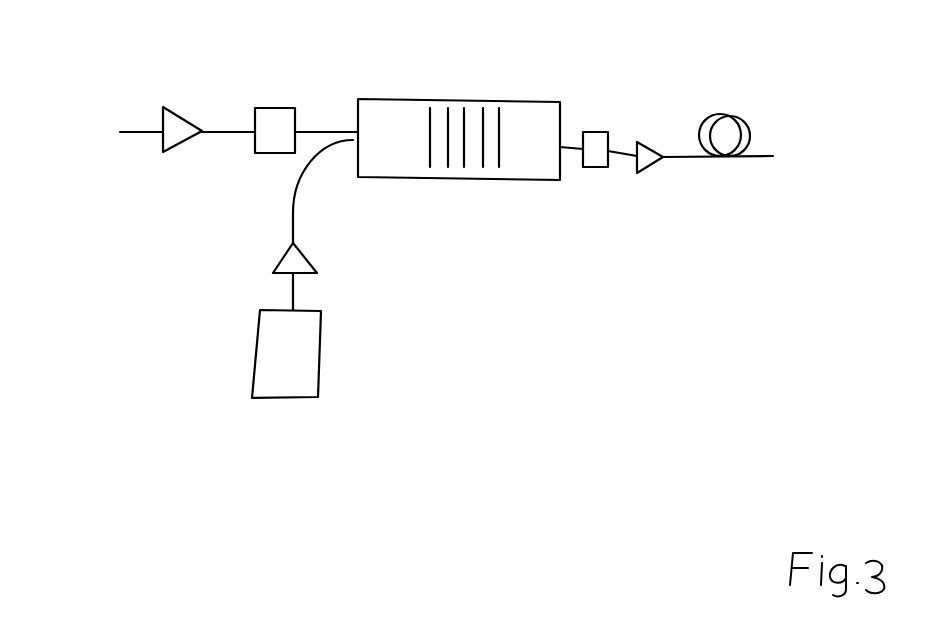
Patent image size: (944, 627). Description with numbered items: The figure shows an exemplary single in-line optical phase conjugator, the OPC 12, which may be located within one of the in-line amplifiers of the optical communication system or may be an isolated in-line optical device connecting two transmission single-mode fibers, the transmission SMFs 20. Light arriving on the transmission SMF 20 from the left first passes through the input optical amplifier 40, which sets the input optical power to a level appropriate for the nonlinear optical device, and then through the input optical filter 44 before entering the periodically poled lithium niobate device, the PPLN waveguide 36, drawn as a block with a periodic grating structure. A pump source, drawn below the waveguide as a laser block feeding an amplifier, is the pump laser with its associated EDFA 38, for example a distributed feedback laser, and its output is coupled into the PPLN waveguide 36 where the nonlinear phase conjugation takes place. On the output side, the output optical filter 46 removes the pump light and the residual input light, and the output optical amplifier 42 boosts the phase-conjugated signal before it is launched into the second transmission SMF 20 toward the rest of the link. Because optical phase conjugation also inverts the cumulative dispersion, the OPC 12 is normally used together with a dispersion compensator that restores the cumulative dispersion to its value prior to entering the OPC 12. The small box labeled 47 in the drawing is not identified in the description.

The optical phase conjugator (OPC) 12 is at (522, 463).
The transmission SMF 20 is at (99, 139).
The PPLN waveguide 36 is at (448, 98).
The pump laser with associated EDFA 38 is at (229, 237).
The input optical amplifier 40 is at (175, 123).
The output optical amplifier 42 is at (650, 140).
The input optical filter 44 is at (727, 185).
The output optical filter 46 is at (597, 138).
The component box 47 is at (277, 120).